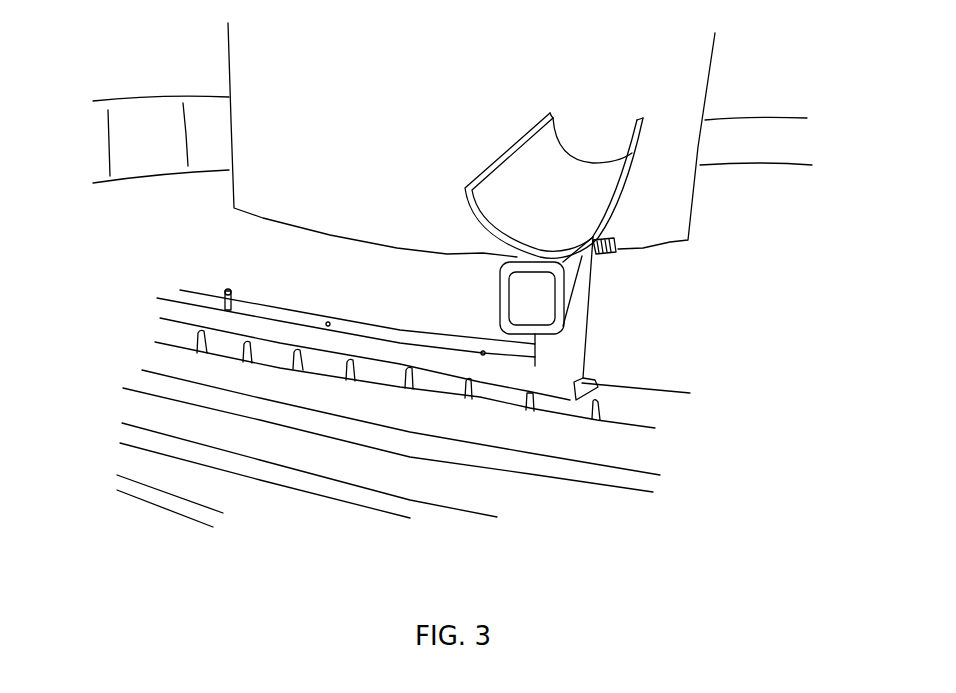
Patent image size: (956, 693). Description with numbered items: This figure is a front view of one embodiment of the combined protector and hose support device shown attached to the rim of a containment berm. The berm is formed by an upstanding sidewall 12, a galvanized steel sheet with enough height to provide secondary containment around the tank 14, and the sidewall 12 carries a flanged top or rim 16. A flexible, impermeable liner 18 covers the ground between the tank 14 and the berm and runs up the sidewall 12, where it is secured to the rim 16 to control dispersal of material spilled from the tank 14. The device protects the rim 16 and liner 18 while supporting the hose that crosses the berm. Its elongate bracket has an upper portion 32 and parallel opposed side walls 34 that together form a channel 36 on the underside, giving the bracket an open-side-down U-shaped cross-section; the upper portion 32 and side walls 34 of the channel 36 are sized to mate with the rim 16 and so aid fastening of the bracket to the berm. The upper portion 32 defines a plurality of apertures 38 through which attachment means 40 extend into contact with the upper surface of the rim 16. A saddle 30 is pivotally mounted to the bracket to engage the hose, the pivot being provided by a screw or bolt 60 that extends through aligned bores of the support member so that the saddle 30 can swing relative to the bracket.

The sidewall 12 is at (388, 451).
The tank 14 is at (520, 140).
The rim 16 is at (406, 379).
The liner 18 is at (186, 136).
The saddle 30 is at (567, 180).
The upper portion 32 is at (289, 318).
The side walls 34 is at (197, 316).
The channel 36 is at (586, 394).
The apertures 38 is at (407, 342).
The attachment means 40 is at (228, 288).
The screw or bolt 60 is at (616, 250).